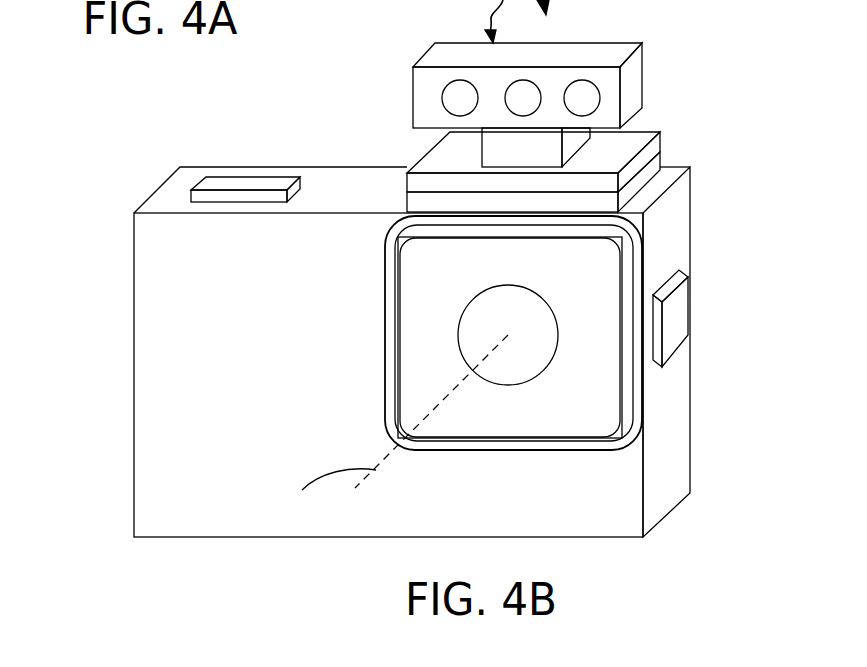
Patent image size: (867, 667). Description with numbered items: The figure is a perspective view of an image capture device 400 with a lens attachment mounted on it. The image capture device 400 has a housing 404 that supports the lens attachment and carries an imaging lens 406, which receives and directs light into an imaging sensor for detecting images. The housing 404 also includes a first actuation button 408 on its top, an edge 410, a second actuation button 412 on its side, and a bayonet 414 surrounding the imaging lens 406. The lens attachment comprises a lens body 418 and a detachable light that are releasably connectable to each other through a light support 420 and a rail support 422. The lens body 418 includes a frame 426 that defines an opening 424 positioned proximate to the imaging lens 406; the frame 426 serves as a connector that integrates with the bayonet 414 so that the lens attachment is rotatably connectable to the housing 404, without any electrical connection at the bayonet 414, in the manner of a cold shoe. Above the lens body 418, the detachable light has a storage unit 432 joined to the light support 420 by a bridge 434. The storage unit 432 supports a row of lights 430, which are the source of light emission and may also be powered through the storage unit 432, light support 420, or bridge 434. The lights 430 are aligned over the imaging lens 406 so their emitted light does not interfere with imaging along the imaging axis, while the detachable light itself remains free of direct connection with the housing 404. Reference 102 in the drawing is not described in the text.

The image capture device 400 is at (82, 238).
The edge 410 is at (676, 190).
The housing 404 is at (316, 162).
The first actuation button 408 is at (237, 177).
The lens body 418 is at (396, 197).
The light support 420 is at (662, 133).
The rail support 422 is at (662, 158).
The bridge 434 is at (481, 148).
The lights 430 is at (600, 97).
The storage unit 432 is at (412, 73).
The second actuation button 412 is at (677, 273).
The frame 426 is at (385, 262).
The opening 424 is at (624, 437).
The window frame 102 is at (436, 451).
The bayonet 414 is at (408, 440).
The imaging lens 406 is at (530, 382).